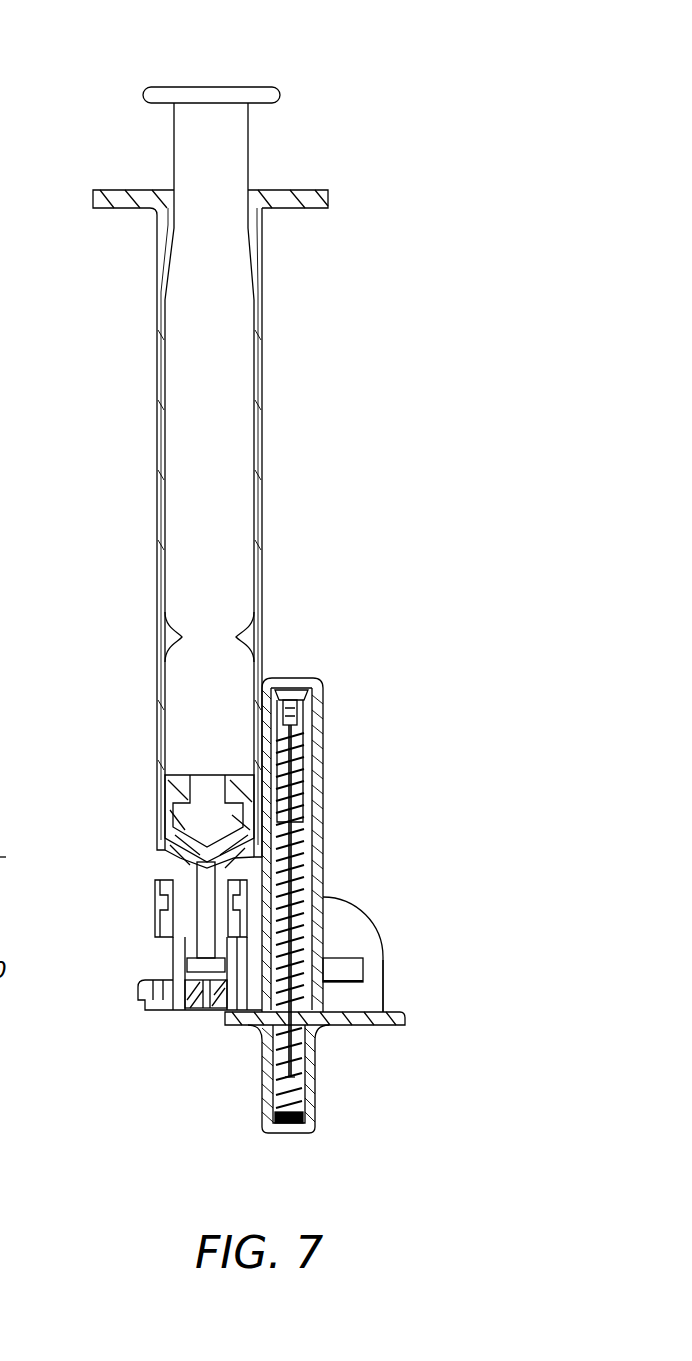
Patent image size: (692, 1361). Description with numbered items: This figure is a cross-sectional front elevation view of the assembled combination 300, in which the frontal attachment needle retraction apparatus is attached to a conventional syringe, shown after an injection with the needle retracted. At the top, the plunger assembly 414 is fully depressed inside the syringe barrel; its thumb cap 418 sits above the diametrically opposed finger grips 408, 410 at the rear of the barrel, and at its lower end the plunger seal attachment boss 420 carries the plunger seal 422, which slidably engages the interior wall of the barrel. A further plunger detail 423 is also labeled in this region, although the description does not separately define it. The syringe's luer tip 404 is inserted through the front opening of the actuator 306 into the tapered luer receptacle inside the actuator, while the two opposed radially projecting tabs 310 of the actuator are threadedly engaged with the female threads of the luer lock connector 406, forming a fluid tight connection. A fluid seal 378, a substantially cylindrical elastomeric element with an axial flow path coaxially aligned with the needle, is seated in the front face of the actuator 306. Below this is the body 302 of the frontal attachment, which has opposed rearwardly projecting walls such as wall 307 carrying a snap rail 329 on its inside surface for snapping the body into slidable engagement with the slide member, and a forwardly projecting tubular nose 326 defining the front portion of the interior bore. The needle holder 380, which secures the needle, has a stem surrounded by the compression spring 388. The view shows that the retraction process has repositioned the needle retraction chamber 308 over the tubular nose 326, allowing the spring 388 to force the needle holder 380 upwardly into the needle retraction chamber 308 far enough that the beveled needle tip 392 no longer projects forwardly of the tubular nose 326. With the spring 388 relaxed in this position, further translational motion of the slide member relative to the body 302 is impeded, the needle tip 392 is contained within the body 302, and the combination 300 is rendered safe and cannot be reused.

The assembled combination 300 is at (128, 345).
The thumb cap 418 is at (262, 90).
The plunger assembly 414 is at (256, 148).
The finger grip 408 is at (107, 198).
The finger grip 410 is at (318, 200).
The plunger seal attachment boss 420 is at (203, 812).
The plunger seal 422 is at (178, 857).
The center pin 423 is at (200, 868).
The luer lock connector 406 is at (160, 903).
The actuator 306 is at (164, 954).
The fluid seal 378 is at (192, 1012).
The needle retraction chamber 308 is at (323, 782).
The needle holder 380 is at (328, 699).
The tabs 310 is at (225, 878).
The luer tip 404 is at (297, 940).
The snap rail 329 is at (355, 968).
The rearwardly projecting wall 307 is at (402, 997).
The body 302 is at (398, 1018).
The spring 388 is at (310, 1108).
The needle tip 392 is at (282, 1068).
The tubular nose 326 is at (277, 1097).